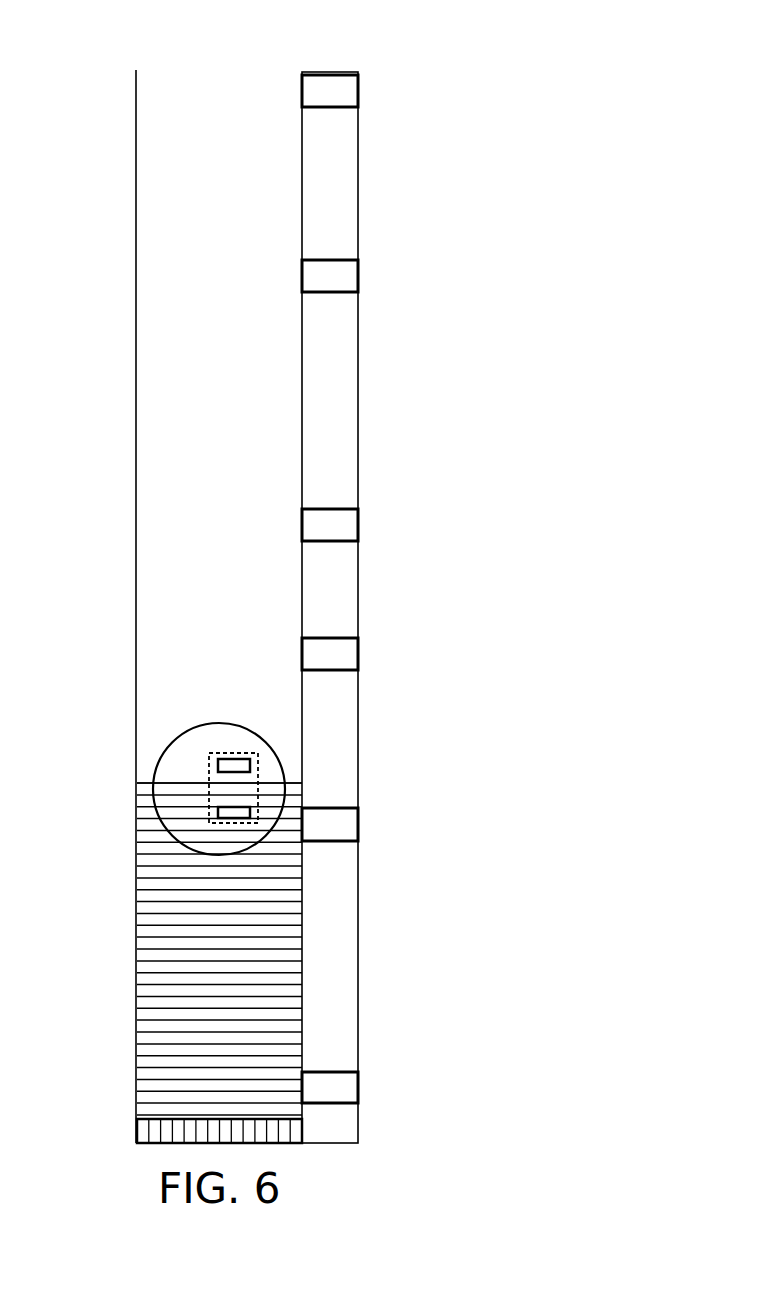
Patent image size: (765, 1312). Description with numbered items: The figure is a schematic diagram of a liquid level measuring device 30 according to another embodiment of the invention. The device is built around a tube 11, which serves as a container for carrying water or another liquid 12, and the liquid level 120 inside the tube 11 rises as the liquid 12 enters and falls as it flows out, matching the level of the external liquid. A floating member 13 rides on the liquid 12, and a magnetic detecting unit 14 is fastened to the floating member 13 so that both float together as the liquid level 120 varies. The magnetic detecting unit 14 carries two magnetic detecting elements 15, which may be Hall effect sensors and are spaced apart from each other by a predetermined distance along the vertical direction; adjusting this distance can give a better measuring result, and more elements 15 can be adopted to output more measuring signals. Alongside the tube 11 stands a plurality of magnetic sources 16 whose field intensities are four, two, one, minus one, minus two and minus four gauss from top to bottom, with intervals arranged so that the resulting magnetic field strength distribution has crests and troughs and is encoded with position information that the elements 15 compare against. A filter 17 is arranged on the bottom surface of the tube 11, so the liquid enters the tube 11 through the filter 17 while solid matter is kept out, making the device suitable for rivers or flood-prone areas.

The liquid level measuring device 30 is at (154, 31).
The tube 11 is at (136, 380).
The liquid 12 is at (150, 906).
The liquid level 120 is at (150, 783).
The floating member 13 is at (207, 725).
The magnetic detecting unit 14 is at (222, 753).
The magnetic detecting elements 15 is at (240, 766).
The magnetic sources 16 is at (330, 96).
The filter 17 is at (158, 1129).